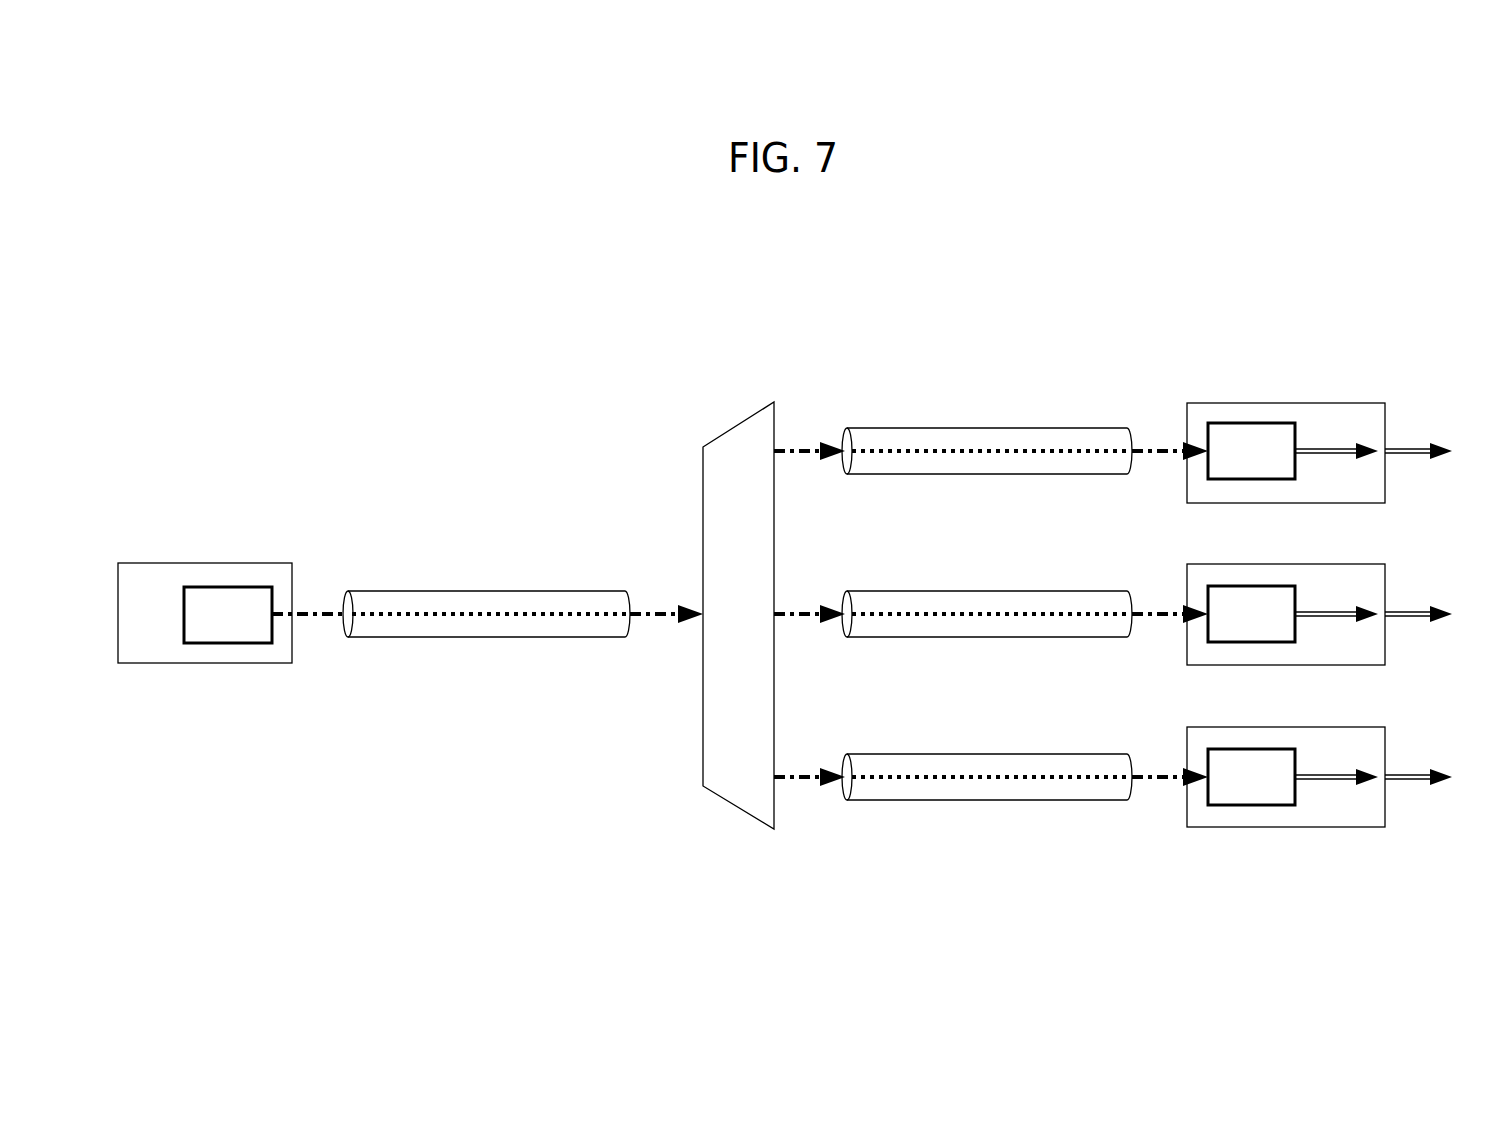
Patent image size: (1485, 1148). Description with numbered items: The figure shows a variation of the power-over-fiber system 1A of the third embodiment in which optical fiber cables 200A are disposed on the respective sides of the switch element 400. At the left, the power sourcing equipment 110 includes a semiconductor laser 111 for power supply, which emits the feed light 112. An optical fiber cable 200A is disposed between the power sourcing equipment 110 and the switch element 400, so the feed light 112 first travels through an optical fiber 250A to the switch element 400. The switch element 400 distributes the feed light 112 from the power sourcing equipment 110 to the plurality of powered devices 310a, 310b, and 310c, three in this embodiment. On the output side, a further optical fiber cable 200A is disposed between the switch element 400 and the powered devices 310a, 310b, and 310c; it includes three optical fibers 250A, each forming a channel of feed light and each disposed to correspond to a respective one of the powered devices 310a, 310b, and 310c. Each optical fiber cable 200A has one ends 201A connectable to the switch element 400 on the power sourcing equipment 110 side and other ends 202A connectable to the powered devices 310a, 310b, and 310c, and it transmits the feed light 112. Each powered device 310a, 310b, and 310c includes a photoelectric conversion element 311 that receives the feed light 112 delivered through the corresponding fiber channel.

The power-over-fiber system 1A is at (1148, 286).
The power sourcing equipment 110 is at (187, 563).
The semiconductor laser 111 is at (185, 610).
The feed light 112 is at (308, 612).
The optical fiber cable 200A is at (491, 546).
The one ends 201A is at (337, 637).
The other ends 202A is at (634, 639).
The optical fiber 250A is at (545, 591).
The switch element 400 is at (732, 426).
The powered device 310a is at (1285, 403).
The powered device 310b is at (1285, 564).
The powered device 310c is at (1285, 727).
The photoelectric conversion element 311 is at (1295, 438).